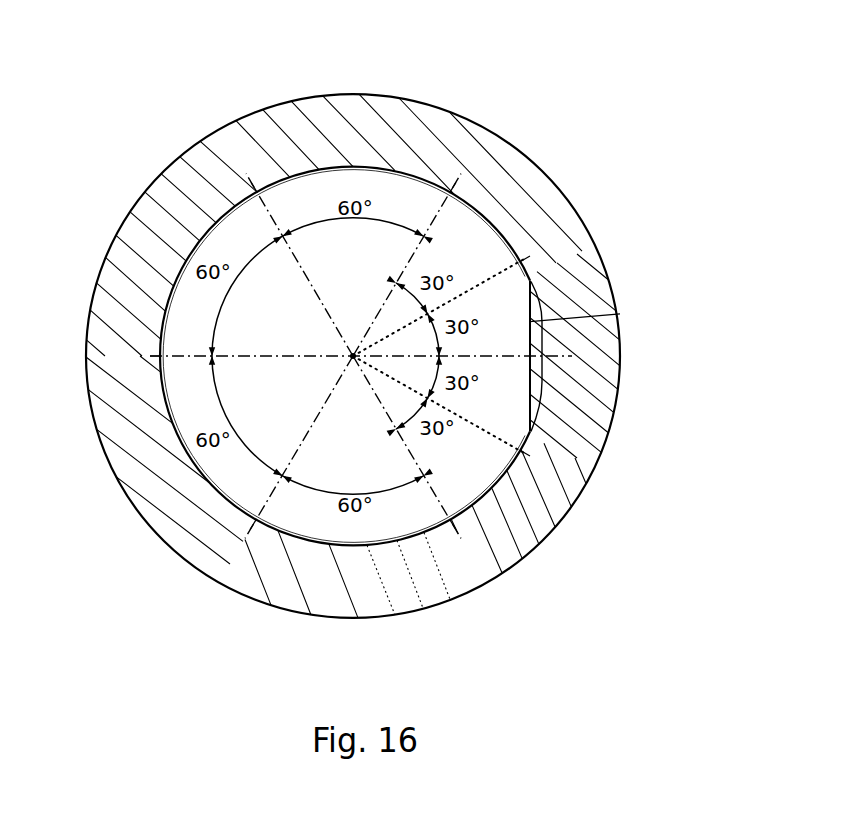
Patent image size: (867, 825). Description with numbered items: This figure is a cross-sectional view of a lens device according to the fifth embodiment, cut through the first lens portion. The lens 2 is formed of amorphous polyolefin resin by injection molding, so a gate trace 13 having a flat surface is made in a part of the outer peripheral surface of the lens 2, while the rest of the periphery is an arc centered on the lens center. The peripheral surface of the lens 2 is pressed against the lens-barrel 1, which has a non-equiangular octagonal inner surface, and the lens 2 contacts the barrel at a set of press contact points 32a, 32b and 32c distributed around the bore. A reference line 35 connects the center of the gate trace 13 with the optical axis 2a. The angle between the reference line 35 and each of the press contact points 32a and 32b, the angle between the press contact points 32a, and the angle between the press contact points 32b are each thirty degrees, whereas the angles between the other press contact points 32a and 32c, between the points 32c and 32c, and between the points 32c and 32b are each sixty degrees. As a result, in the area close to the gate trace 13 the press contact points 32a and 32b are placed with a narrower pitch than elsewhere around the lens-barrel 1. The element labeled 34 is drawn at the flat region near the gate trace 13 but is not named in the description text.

The lens-barrel 1 is at (353, 346).
The lens 2 is at (345, 284).
The optical axis 2a is at (355, 317).
The gate trace 13 is at (610, 304).
The press contact point 32a is at (532, 554).
The press contact point 32b is at (544, 164).
The press contact point 32c is at (160, 338).
The flat portion 34 is at (624, 355).
The reference line 35 is at (588, 356).